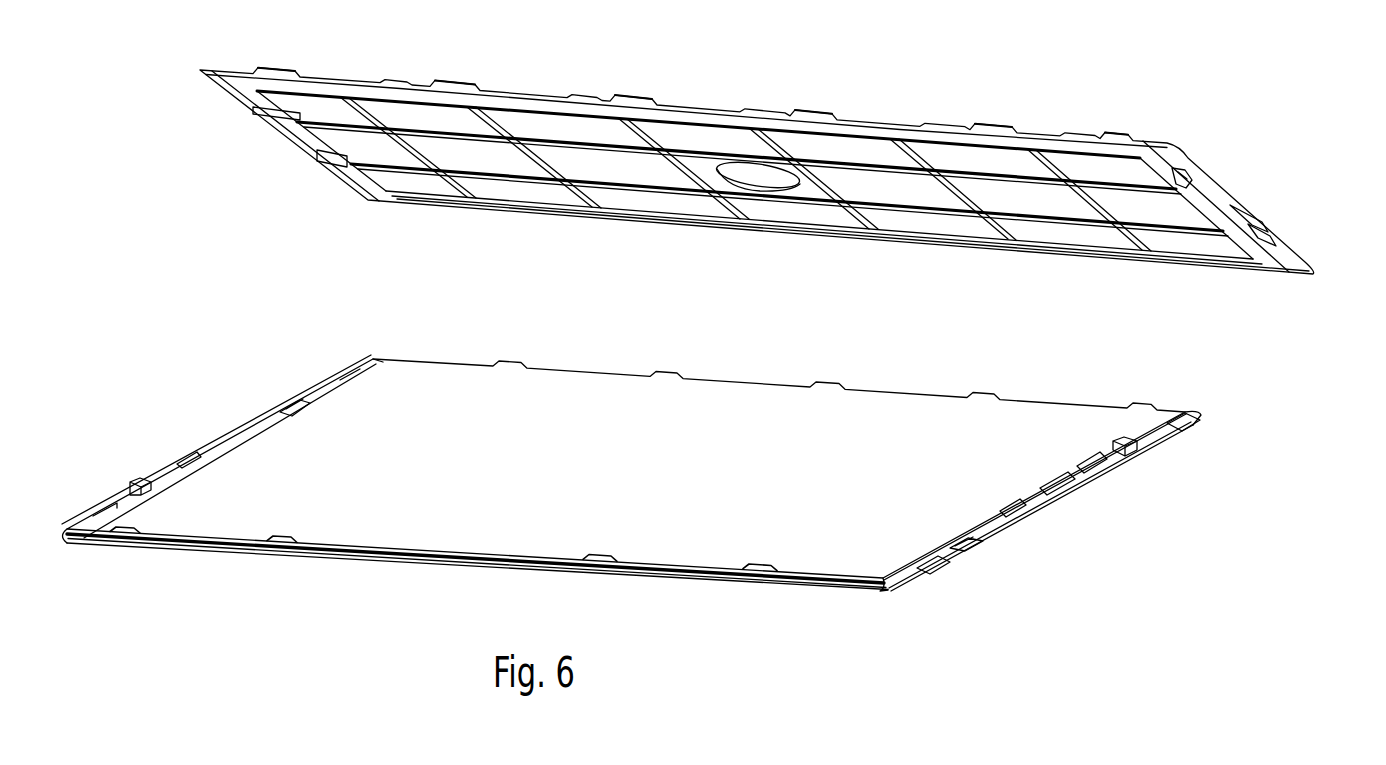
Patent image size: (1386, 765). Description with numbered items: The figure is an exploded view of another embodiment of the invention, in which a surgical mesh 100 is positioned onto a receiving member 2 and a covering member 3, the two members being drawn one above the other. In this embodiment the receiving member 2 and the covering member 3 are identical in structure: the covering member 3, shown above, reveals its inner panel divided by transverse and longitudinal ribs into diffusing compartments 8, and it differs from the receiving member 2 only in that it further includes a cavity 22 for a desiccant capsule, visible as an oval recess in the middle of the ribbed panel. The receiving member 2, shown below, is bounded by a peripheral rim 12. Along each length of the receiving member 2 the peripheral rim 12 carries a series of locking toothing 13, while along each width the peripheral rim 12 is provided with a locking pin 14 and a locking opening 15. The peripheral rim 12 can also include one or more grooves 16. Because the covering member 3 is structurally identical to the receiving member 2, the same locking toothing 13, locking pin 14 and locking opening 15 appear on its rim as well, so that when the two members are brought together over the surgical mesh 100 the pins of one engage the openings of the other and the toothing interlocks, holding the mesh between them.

The surgical mesh 100 is at (843, 560).
The receiving member 2 is at (1003, 547).
The covering member 3 is at (1260, 213).
The diffusing compartments 8 is at (478, 170).
The peripheral rim 12 is at (197, 453).
The locking toothing 13 is at (377, 82).
The locking pin 14 is at (1183, 180).
The locking opening 15 is at (1273, 229).
The grooves 16 is at (933, 570).
The cavity 22 is at (753, 181).